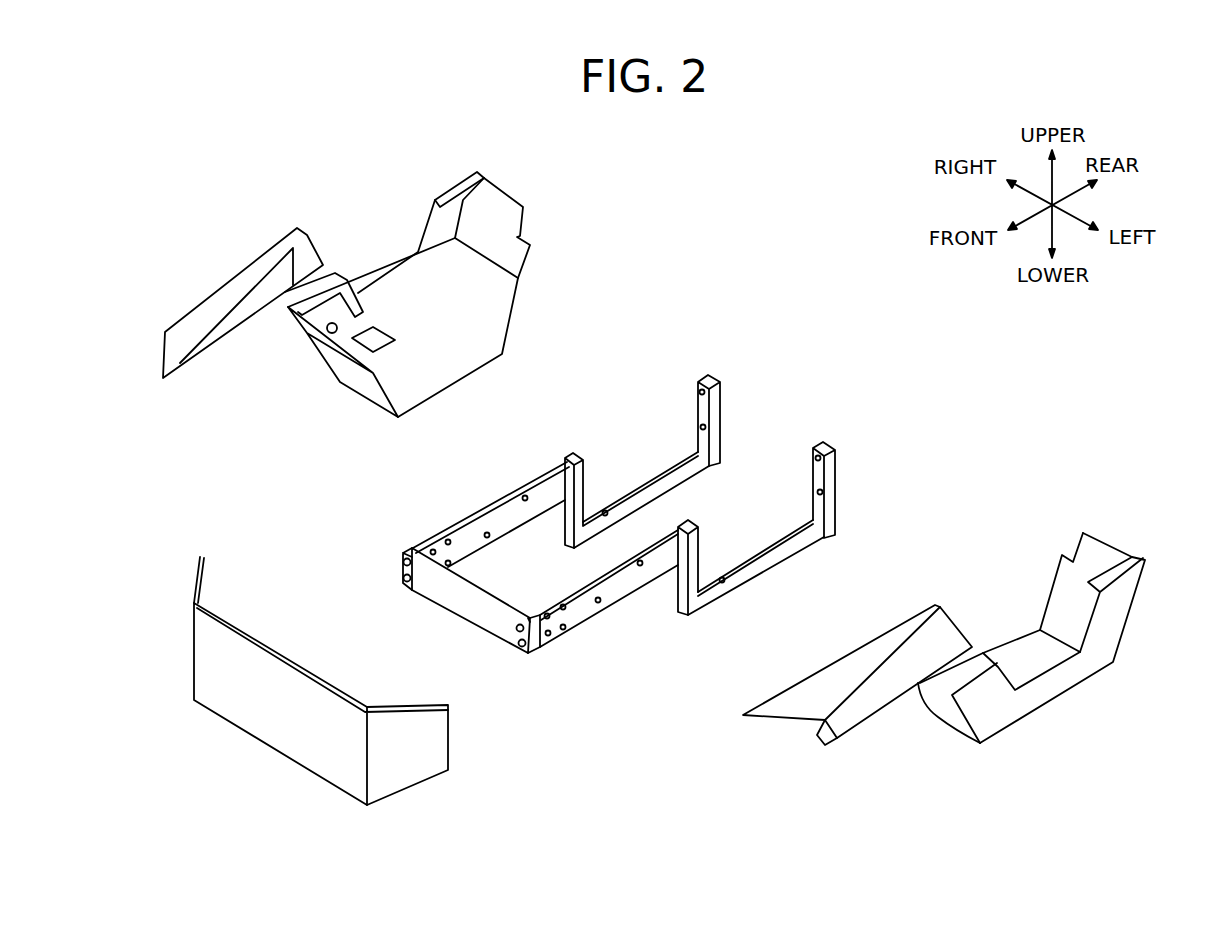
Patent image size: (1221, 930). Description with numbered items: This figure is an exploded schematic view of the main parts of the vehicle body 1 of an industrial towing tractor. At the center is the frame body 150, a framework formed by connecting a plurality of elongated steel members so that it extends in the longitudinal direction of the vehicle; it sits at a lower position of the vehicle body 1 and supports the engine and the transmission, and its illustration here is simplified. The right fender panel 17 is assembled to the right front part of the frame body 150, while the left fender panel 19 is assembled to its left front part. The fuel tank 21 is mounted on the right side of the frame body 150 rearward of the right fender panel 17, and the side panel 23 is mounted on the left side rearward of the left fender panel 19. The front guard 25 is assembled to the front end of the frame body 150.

The vehicle body 1 is at (560, 773).
The right fender panel 17 is at (241, 282).
The fuel tank 21 is at (473, 357).
The frame body 150 is at (643, 575).
The left fender panel 19 is at (892, 688).
The side panel 23 is at (1068, 675).
The front guard 25 is at (289, 715).